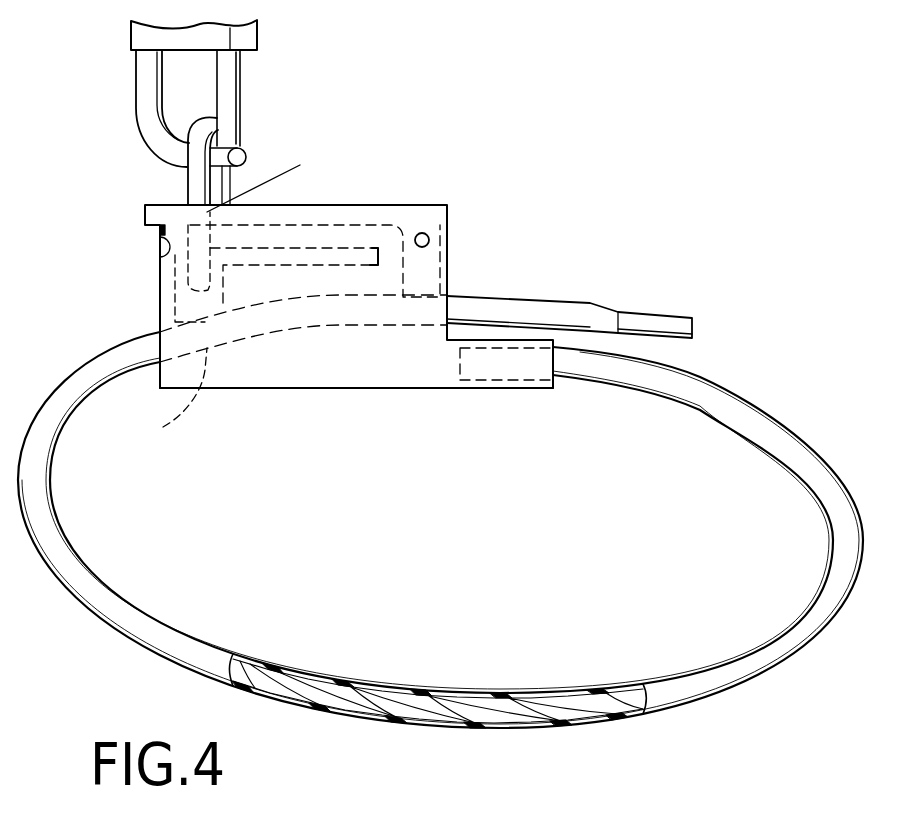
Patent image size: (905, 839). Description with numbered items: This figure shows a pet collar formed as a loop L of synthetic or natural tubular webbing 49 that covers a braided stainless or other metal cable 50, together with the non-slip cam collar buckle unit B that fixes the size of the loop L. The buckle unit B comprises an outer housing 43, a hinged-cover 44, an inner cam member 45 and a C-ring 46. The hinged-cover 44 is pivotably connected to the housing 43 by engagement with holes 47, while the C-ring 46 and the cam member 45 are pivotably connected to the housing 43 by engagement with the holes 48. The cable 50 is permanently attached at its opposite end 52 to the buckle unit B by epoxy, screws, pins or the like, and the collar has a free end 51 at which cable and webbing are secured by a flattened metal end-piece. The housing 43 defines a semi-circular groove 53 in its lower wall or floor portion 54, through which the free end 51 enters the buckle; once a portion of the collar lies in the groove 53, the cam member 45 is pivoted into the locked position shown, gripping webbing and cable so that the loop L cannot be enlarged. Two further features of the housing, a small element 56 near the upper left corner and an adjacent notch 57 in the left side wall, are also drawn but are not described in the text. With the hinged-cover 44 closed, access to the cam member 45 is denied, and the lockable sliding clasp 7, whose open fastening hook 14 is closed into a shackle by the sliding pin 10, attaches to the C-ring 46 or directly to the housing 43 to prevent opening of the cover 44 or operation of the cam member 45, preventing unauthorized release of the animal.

The lockable sliding clasp 7 is at (268, 40).
The sliding pin 10 is at (237, 88).
The open fastening hook 14 is at (140, 107).
The C-ring 46 is at (212, 128).
The outer housing 43 is at (449, 270).
The hinged-cover 44 is at (407, 223).
The inner cam member 45 is at (342, 262).
The holes 47 is at (430, 238).
The holes 48 is at (193, 278).
The free end 51 is at (674, 317).
The opposite end 52 is at (520, 392).
The semi-circular groove 53 is at (167, 397).
The lower wall or floor portion 54 is at (293, 390).
The pin 56 is at (160, 232).
The notch 57 is at (165, 252).
The tubular webbing 49 is at (492, 690).
The braided cable 50 is at (356, 700).
The non-slip cam collar buckle unit B is at (349, 335).
The loop L is at (440, 530).